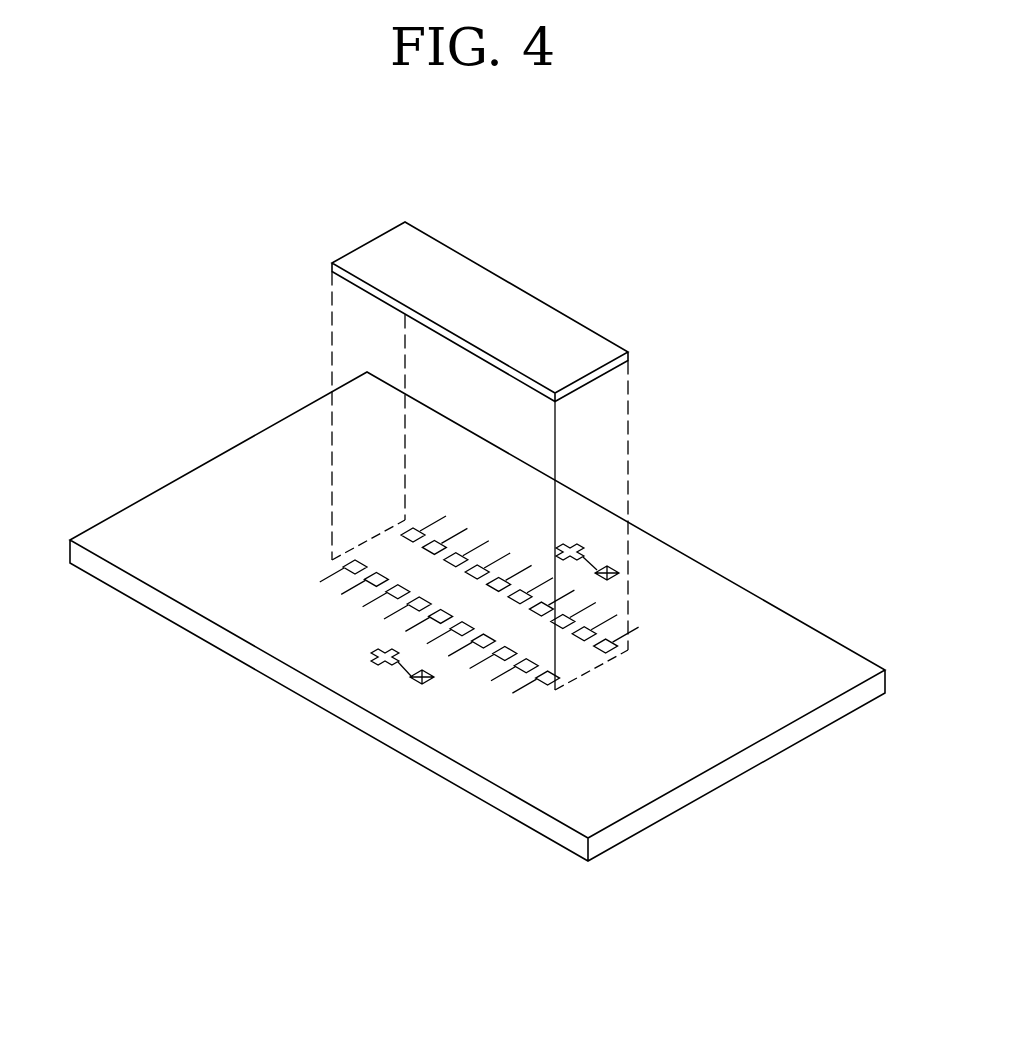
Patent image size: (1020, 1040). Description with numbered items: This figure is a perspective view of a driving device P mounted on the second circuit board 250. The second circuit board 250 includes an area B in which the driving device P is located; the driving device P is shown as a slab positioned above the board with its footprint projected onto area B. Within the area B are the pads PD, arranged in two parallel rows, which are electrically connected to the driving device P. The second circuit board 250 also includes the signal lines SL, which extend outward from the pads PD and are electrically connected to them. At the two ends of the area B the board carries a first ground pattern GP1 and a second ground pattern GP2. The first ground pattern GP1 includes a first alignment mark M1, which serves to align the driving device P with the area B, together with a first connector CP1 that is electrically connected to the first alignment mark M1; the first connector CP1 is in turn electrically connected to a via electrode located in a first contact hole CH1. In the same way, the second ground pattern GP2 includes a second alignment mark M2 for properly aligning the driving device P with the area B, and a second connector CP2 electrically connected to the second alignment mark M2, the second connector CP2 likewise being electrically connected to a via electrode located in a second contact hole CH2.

The second circuit board 250 is at (782, 630).
The driving device P is at (550, 326).
The area B is at (577, 673).
The pads PD is at (620, 644).
The signal lines SL is at (633, 627).
The first ground pattern GP1 is at (328, 728).
The first alignment mark M1 is at (380, 652).
The first connector CP1 is at (403, 675).
The first contact hole CH1 is at (418, 678).
The second ground pattern GP2 is at (663, 505).
The second alignment mark M2 is at (578, 546).
The second connector CP2 is at (592, 566).
The second contact hole CH2 is at (617, 571).